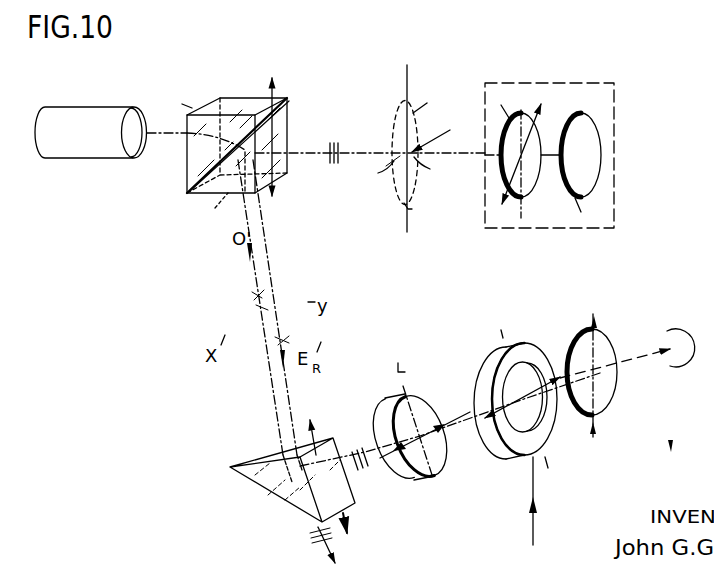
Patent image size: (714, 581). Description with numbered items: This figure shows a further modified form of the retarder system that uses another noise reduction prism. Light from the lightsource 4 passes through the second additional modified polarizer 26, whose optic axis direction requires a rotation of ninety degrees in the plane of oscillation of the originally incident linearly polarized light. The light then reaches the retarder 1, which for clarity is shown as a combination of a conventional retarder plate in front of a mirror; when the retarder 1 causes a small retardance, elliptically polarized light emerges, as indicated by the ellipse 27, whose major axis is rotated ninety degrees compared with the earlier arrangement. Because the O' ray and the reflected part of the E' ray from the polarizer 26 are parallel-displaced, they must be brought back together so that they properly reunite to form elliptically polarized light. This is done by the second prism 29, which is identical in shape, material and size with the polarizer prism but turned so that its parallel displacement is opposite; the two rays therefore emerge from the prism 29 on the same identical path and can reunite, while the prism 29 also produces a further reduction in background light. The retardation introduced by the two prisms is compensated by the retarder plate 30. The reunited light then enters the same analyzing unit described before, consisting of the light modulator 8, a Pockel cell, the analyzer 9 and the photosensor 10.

The lightsource 4 is at (86, 107).
The modified polarizer 26 is at (233, 106).
The ellipse 27 is at (395, 122).
The retarder 1 is at (610, 134).
The second prism 29 is at (262, 485).
The retarder plate 30 is at (424, 478).
The light modulator 8 is at (529, 457).
The analyzer 9 is at (614, 416).
The photosensor 10 is at (627, 377).